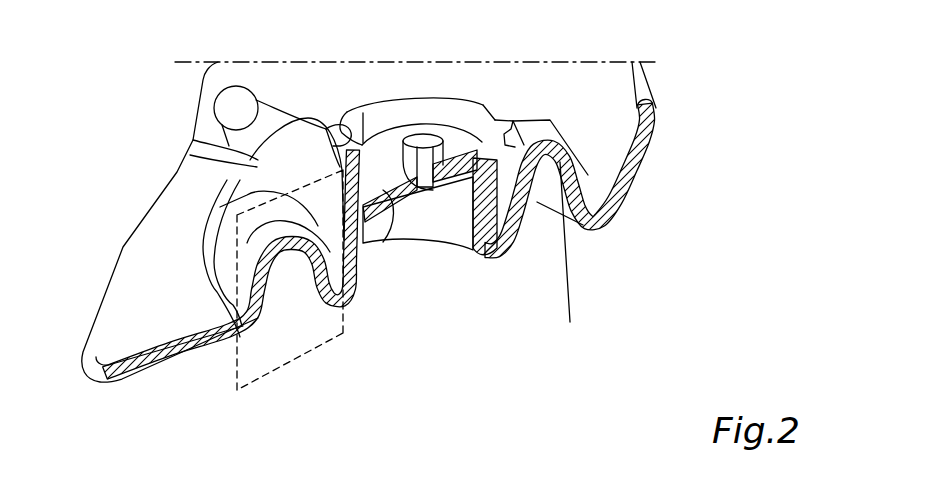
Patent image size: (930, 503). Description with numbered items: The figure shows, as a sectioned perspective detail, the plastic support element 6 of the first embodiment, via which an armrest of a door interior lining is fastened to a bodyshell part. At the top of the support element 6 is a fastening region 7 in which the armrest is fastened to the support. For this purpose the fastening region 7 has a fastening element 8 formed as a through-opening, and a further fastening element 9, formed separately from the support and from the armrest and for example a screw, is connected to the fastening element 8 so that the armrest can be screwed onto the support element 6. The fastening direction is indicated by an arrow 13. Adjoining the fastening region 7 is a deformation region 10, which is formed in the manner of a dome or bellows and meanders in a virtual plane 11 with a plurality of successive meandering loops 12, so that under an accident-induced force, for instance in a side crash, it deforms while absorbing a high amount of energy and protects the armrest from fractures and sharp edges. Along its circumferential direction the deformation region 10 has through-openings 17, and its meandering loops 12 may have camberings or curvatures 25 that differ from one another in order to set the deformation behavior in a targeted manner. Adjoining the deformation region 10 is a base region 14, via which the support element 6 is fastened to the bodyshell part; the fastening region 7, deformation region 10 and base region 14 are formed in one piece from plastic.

The support element 6 is at (632, 156).
The fastening region 7 is at (388, 244).
The fastening element 8 is at (428, 205).
The further fastening element 9 is at (443, 132).
The deformation region 10 is at (589, 233).
The plane 11 is at (292, 365).
The meandering loop 12 is at (253, 285).
The arrow 13 is at (410, 110).
The base region 14 is at (123, 372).
The through-openings 17 is at (327, 125).
The camberings and/or curvatures 25 is at (573, 258).